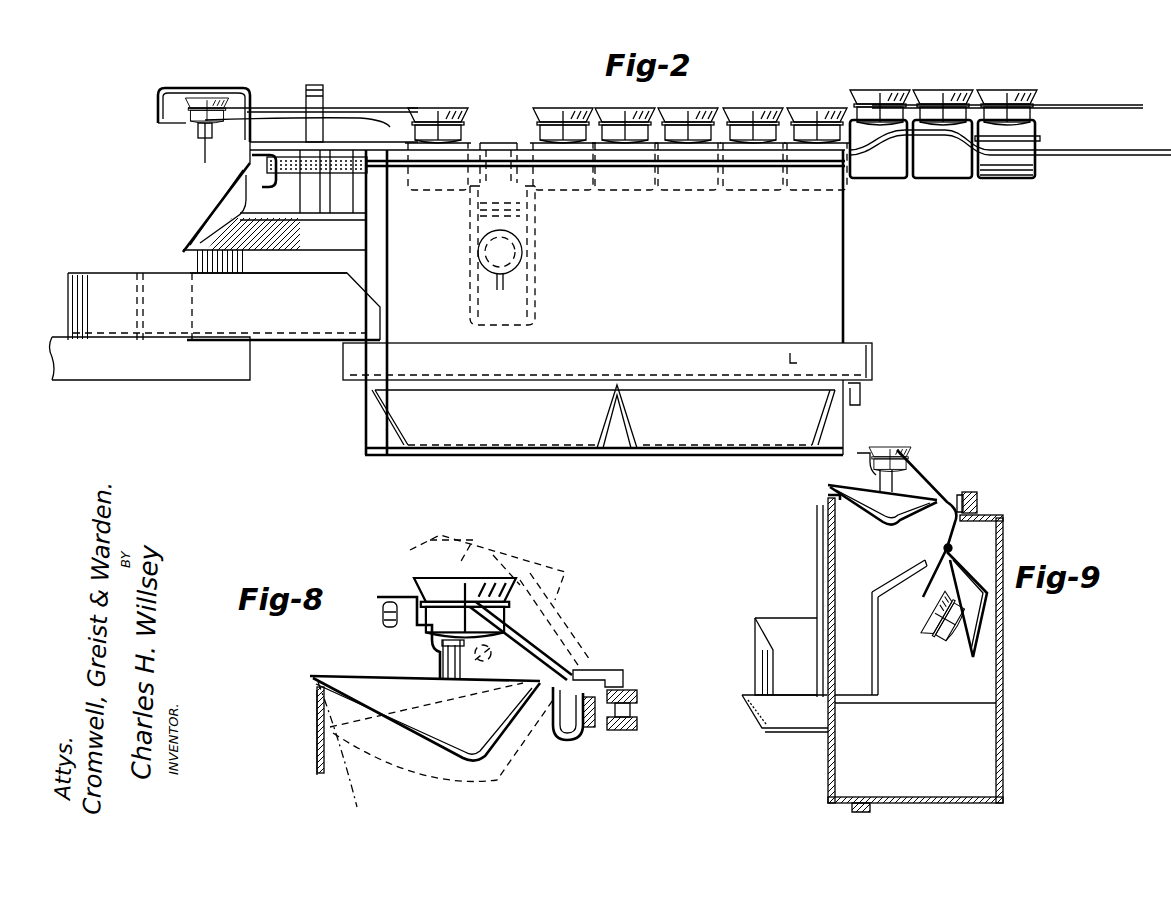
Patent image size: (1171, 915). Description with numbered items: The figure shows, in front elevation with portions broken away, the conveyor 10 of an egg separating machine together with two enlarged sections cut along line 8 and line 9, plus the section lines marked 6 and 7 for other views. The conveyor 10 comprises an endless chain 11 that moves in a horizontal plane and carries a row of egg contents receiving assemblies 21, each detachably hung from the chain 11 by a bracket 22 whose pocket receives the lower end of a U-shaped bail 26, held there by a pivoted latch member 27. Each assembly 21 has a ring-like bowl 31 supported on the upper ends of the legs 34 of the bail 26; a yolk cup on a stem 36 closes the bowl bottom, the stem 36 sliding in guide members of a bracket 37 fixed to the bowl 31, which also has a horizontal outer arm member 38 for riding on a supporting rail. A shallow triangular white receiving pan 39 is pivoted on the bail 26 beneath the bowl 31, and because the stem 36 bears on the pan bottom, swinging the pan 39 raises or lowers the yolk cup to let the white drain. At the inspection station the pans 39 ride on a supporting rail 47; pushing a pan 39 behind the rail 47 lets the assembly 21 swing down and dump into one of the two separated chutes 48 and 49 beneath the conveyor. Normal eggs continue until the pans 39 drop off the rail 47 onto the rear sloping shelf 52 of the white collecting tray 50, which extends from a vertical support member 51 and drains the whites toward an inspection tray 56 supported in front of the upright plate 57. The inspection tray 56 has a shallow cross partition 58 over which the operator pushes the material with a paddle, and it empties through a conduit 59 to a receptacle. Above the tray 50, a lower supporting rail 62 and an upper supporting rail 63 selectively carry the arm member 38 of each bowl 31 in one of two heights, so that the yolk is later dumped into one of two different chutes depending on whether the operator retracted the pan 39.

In FIG. 2, the section line 6- 6 is at (1037, 85).
In FIG. 2, the section line 7- 7 is at (913, 85).
In FIG. 2, the section line 8— 8 is at (604, 92).
In FIG. 2, the section line 9— 9 is at (538, 86).
In FIG. 2, the conveyor 10 is at (436, 62).
In FIG. 8, the endless chain 11 is at (638, 711).
In FIG. 9, the endless chain 11 is at (978, 502).
In FIG. 2, the egg contents receiving assembly 21 is at (221, 200).
In FIG. 9, the egg contents receiving assembly 21 is at (854, 486).
In FIG. 8, the bracket 22 is at (597, 722).
In FIG. 8, the bail 26 is at (553, 737).
In FIG. 9, the bail 26 is at (944, 520).
In FIG. 8, the latch member 27 is at (604, 670).
In FIG. 9, the latch member 27 is at (958, 493).
In FIG. 2, the bowl-like member 31 is at (215, 97).
In FIG. 8, the bowl-like member 31 is at (428, 578).
In FIG. 9, the bowl-like member 31 is at (895, 447).
In FIG. 8, the legs 34 is at (523, 660).
In FIG. 8, the stem 36 is at (499, 658).
In FIG. 8, the bracket 37 is at (441, 657).
In FIG. 8, the arm member 38 is at (385, 597).
In FIG. 2, the white receiving pan 39 is at (214, 220).
In FIG. 8, the white receiving pan 39 is at (348, 655).
In FIG. 9, the white receiving pan 39 is at (877, 520).
In FIG. 2, the supporting rail 47 is at (641, 155).
In FIG. 8, the supporting rail 47 is at (317, 697).
In FIG. 9, the supporting rail 47 is at (826, 498).
In FIG. 2, the chute 48 is at (690, 440).
In FIG. 2, the chute 49 is at (571, 445).
In FIG. 2, the white collecting tray 50 is at (157, 273).
In FIG. 9, the white collecting tray 50 is at (790, 615).
In FIG. 2, the vertical support member 51 is at (389, 285).
In FIG. 9, the vertical support member 51 is at (817, 545).
In FIG. 2, the rear sloping shelf 52 is at (287, 232).
In FIG. 9, the rear sloping shelf 52 is at (895, 584).
In FIG. 2, the inspection tray 56 is at (873, 352).
In FIG. 9, the inspection tray 56 is at (752, 708).
In FIG. 2, the upright plate 57 is at (843, 285).
In FIG. 8, the upright plate 57 is at (317, 732).
In FIG. 9, the upright plate 57 is at (828, 570).
In FIG. 2, the cross partition 58 is at (795, 358).
In FIG. 2, the conduit 59 is at (862, 393).
In FIG. 2, the lower supporting rail 62 is at (333, 123).
In FIG. 2, the upper supporting rail 63 is at (290, 108).